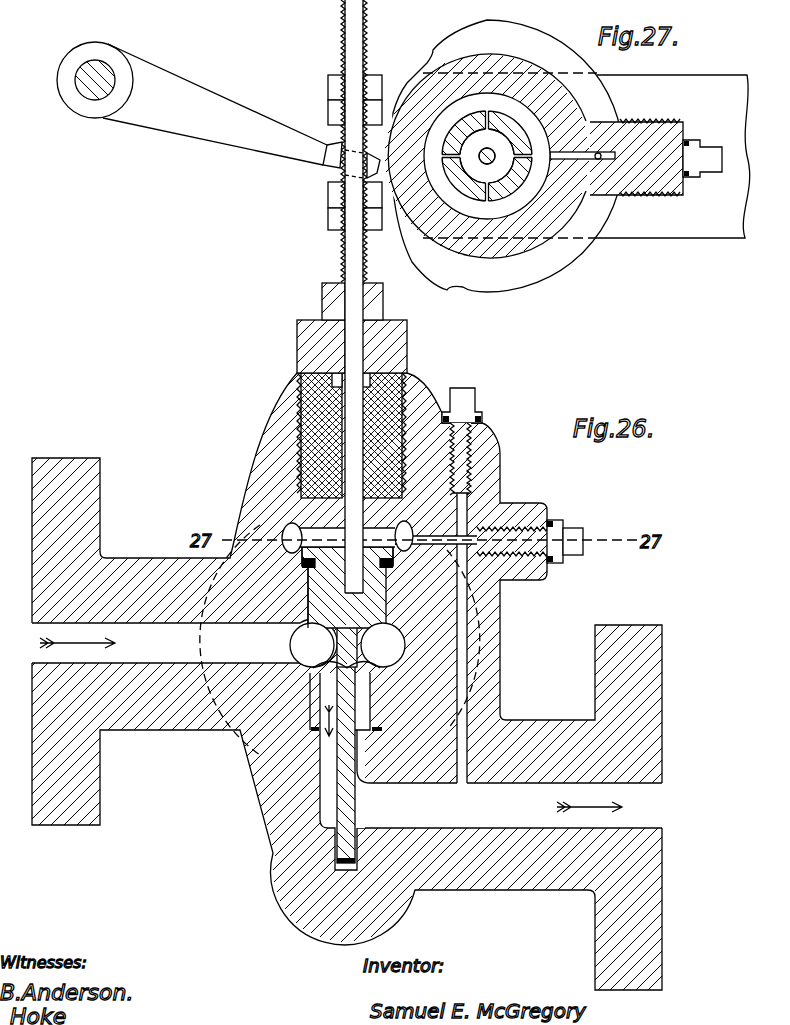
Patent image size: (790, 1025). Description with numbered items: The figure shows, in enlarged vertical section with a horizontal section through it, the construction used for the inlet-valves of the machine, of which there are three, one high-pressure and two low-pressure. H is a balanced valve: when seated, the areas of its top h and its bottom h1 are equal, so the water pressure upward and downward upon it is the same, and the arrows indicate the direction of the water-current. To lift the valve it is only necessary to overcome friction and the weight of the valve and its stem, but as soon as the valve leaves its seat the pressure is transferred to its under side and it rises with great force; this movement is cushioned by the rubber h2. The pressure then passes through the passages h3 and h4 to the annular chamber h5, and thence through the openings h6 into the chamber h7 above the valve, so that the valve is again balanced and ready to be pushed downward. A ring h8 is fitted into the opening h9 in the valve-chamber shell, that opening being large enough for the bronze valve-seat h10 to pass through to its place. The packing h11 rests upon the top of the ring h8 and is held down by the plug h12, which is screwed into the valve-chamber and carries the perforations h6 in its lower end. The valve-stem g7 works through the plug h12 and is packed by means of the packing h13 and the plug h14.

In FIG. 26, the threaded valve stem rod g7 is at (345, 270).
In FIG. 26, the top of the valve h is at (398, 632).
In FIG. 26, the balanced valve H is at (383, 645).
In FIG. 26, the bottom of the valve h1 is at (412, 486).
In FIG. 26, the rubber h2 is at (402, 660).
In FIG. 26, the passage h3 is at (418, 783).
In FIG. 26, the passage h4 is at (457, 535).
In FIG. 26, the annular chamber h5 is at (290, 525).
In FIG. 26, the openings h6 is at (298, 484).
In FIG. 27, the openings h6 is at (491, 154).
In FIG. 26, the chamber above the valve h7 is at (378, 480).
In FIG. 27, the chamber above the valve h7 is at (573, 156).
In FIG. 26, the ring h8 is at (312, 598).
In FIG. 26, the opening h9 is at (303, 562).
In FIG. 26, the bronze valve-seat h10 is at (312, 690).
In FIG. 26, the packing h11 is at (395, 560).
In FIG. 26, the plug h12 is at (305, 420).
In FIG. 26, the packing h13 is at (408, 365).
In FIG. 26, the plug h14 is at (385, 298).